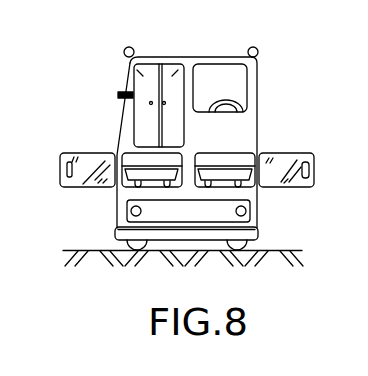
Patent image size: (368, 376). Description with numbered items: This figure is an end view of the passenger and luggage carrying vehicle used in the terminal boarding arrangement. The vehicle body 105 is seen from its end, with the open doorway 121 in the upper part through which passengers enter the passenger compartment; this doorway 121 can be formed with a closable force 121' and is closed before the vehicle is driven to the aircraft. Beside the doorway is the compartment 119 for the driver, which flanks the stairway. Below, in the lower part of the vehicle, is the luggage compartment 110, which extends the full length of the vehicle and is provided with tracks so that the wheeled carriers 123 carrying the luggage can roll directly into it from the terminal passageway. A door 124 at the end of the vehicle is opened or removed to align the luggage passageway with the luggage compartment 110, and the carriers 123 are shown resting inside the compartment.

The cab door 105 is at (170, 77).
The luggage compartment 110 is at (132, 160).
The driver compartment 119 is at (232, 88).
The open doorway 121 is at (81, 102).
The closable force 121' is at (102, 144).
The wheeled carriers 123 is at (228, 175).
The door 124 is at (289, 157).